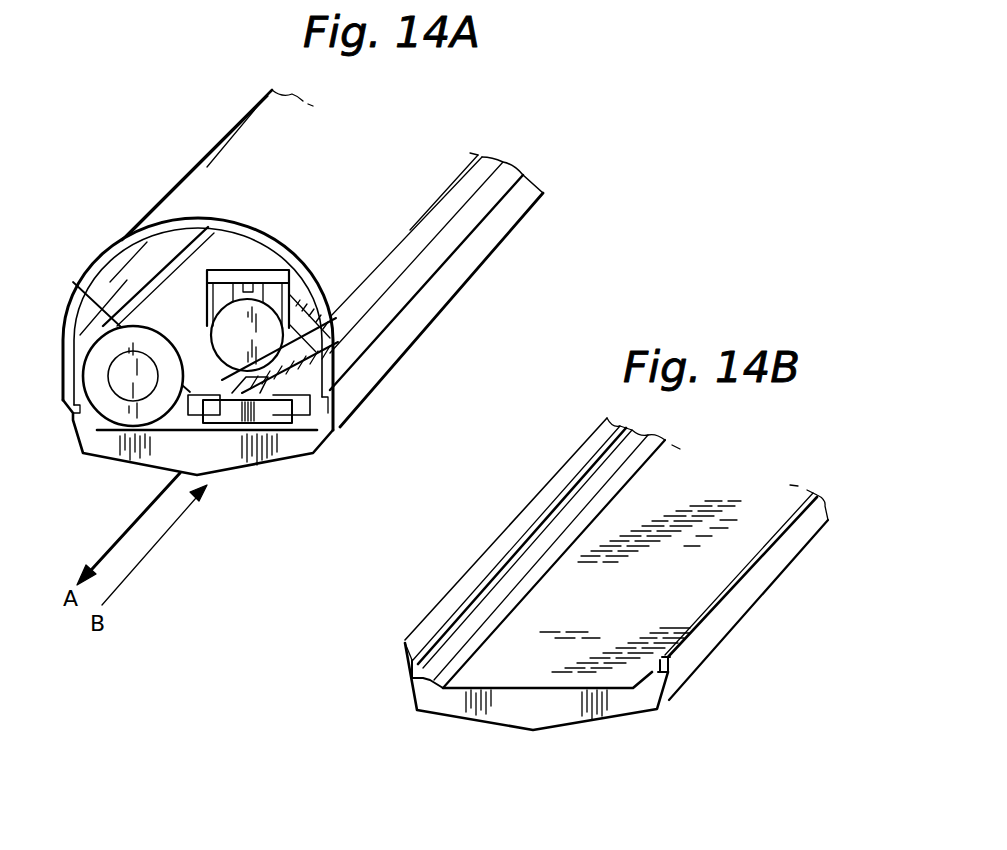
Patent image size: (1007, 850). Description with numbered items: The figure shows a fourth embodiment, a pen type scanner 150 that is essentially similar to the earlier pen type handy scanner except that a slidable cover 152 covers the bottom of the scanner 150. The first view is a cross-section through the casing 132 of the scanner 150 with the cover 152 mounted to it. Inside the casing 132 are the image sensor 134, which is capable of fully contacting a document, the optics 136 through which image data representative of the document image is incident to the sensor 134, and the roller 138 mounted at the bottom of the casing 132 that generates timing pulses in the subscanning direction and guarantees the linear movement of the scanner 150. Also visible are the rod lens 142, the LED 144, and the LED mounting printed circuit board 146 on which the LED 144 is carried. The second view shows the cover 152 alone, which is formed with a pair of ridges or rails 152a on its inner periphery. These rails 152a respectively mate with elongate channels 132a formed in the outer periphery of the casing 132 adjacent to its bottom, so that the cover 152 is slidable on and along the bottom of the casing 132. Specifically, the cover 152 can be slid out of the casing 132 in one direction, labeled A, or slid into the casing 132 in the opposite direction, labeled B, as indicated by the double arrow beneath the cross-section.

In FIG. 14A, the casing 132 is at (250, 102).
In FIG. 14A, the elongate channel 132a is at (73, 412).
In FIG. 14A, the image sensor 134 is at (274, 411).
In FIG. 14A, the optics 136 is at (270, 415).
In FIG. 14A, the roller 138 is at (122, 340).
In FIG. 14A, the rod lens 142 is at (217, 337).
In FIG. 14A, the LED 144 is at (208, 330).
In FIG. 14A, the LED mounting printed circuit board 146 is at (250, 277).
In FIG. 14A, the pen type scanner 150 is at (453, 307).
In FIG. 14B, the pen type scanner 150 is at (540, 488).
In FIG. 14A, the slidable cover 152 is at (240, 468).
In FIG. 14B, the slidable cover 152 is at (510, 727).
In FIG. 14B, the rail 152a is at (437, 640).